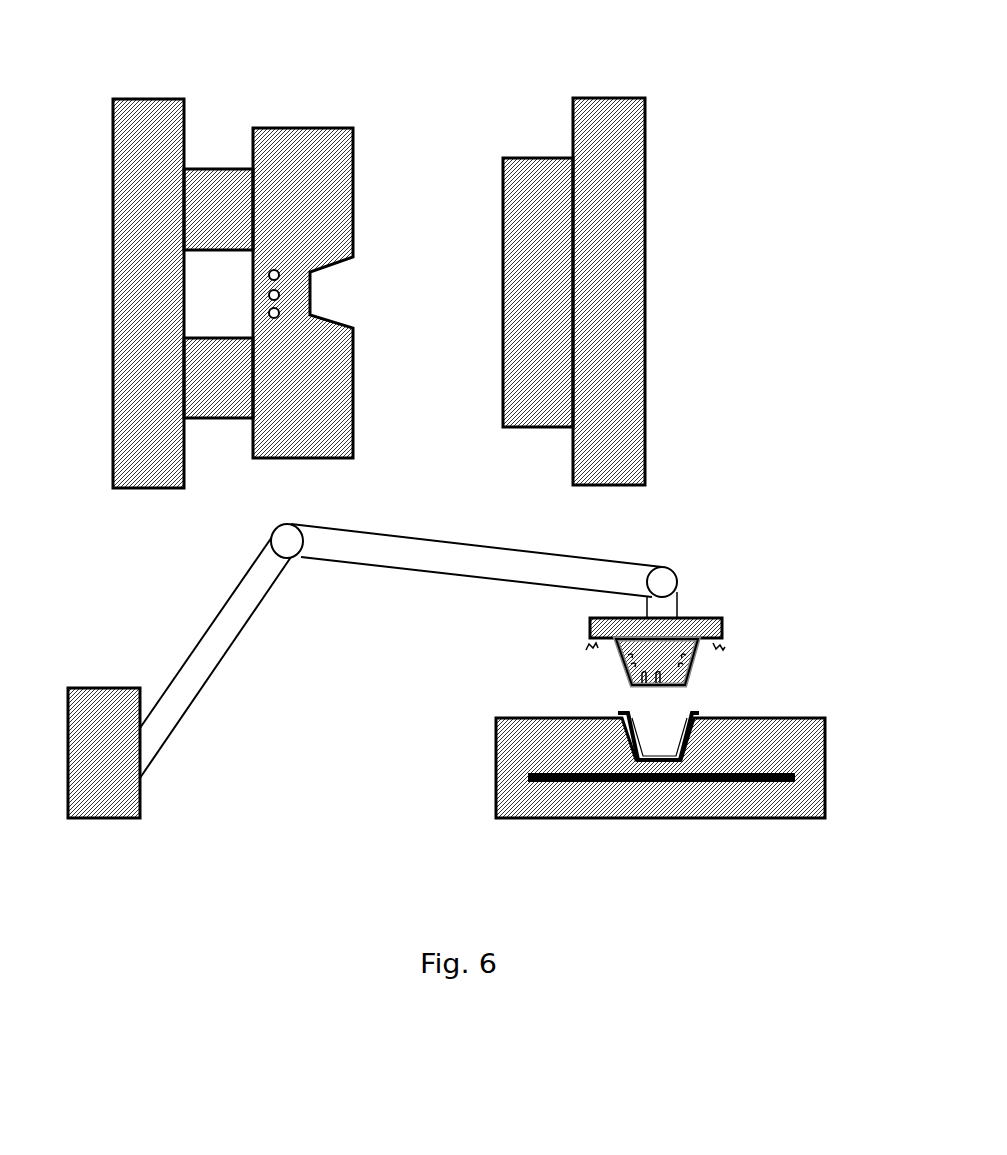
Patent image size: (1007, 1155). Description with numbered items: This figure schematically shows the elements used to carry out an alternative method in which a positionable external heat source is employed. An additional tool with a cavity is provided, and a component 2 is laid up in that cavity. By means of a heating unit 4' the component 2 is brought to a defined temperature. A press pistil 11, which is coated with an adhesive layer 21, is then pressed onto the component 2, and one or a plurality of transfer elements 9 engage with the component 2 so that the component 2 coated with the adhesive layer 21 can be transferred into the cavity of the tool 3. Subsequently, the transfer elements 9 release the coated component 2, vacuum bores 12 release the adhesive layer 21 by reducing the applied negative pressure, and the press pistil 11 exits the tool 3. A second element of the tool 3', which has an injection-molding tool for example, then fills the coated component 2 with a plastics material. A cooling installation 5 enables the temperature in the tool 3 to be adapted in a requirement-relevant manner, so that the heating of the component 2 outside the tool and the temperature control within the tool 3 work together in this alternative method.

The tool 3 is at (233, 255).
The second element of the tool 3' is at (574, 255).
The cooling installation 5 is at (268, 275).
The press pistil 11 is at (703, 627).
The vacuum bores 12 is at (635, 663).
The transfer elements 9 is at (586, 645).
The adhesive layer 21 is at (690, 657).
The component 2 is at (654, 760).
The heating unit 4' is at (661, 836).